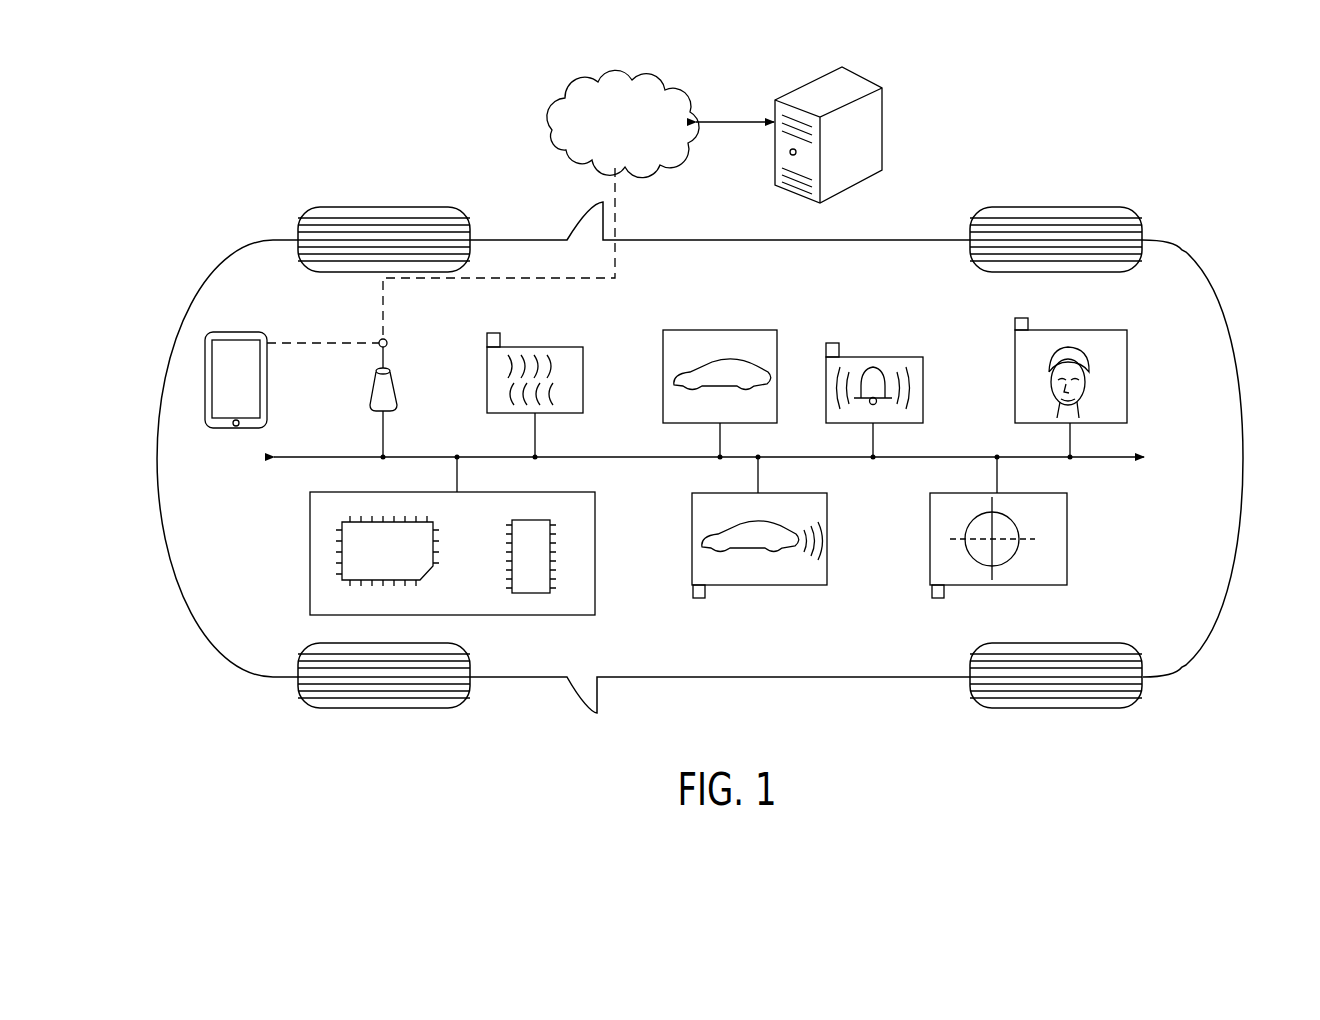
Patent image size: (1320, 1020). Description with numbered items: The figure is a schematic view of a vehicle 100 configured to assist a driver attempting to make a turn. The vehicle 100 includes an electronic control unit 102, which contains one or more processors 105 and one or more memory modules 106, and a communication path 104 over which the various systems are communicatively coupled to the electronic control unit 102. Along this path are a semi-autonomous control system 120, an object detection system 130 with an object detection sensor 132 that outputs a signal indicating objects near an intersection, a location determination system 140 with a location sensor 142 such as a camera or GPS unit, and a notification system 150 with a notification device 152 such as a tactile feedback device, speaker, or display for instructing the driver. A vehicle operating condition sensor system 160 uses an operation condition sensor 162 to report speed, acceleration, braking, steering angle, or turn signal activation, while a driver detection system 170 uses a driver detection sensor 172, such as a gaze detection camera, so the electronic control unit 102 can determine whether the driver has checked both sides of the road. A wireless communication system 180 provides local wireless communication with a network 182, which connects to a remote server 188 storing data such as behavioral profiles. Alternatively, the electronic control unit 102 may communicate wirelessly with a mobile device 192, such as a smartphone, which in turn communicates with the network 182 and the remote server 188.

The vehicle 100 is at (1075, 190).
The electronic control unit 102 is at (489, 536).
The communication path 104 is at (350, 456).
The processor 105 is at (428, 576).
The memory module 106 is at (510, 520).
The semi-autonomous control system 120 is at (720, 330).
The object detection system 130 is at (585, 378).
The object detection sensor 132 is at (492, 332).
The location determination system 140 is at (1068, 540).
The location sensor 142 is at (938, 599).
The notification system 150 is at (888, 357).
The notification device 152 is at (832, 343).
The vehicle operating condition sensor system 160 is at (828, 540).
The operation condition sensor 162 is at (700, 599).
The driver detection system 170 is at (1128, 378).
The driver detection sensor 172 is at (1021, 318).
The wireless communication system 180 is at (389, 365).
The network 182 is at (549, 118).
The remote server 188 is at (884, 130).
The mobile device 192 is at (236, 432).